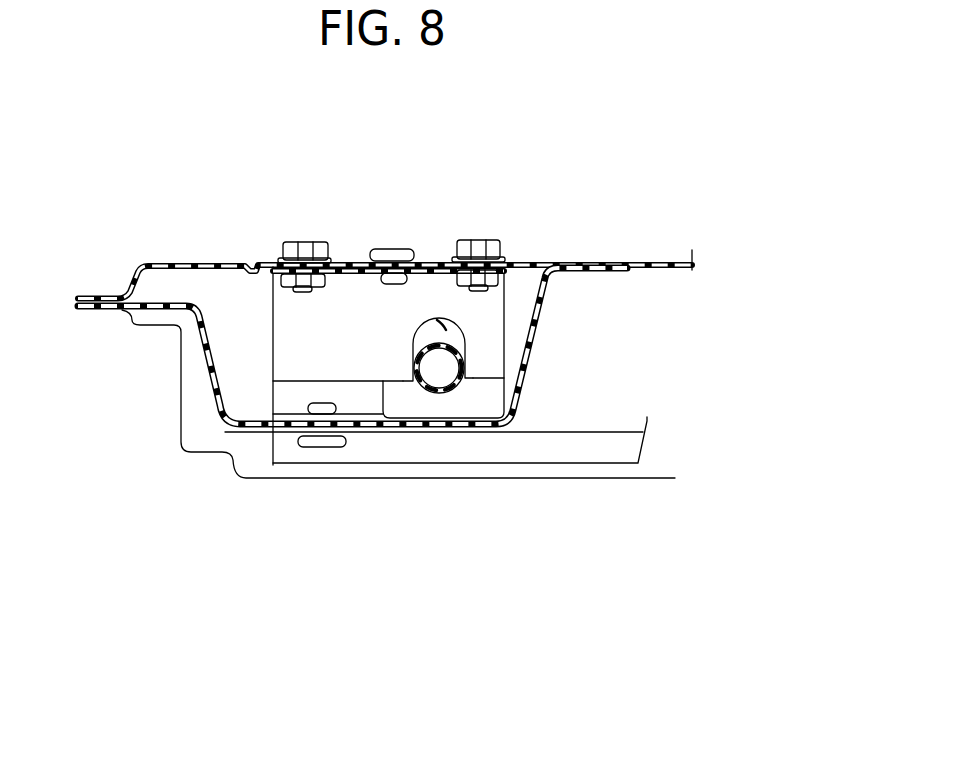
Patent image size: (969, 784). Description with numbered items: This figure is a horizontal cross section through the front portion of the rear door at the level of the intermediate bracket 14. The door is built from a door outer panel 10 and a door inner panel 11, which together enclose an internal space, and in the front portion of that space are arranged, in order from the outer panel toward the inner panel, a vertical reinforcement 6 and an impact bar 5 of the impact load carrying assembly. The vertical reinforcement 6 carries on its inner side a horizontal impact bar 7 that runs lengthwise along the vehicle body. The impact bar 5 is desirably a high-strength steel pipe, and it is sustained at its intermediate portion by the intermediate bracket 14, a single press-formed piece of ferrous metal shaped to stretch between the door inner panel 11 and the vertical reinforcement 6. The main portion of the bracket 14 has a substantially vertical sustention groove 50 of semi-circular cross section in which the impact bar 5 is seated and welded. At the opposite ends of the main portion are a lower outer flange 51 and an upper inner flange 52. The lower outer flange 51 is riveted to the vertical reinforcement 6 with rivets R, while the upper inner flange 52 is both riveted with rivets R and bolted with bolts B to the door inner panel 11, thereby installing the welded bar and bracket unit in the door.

The door inner panel 11 is at (632, 261).
The vertical reinforcement 6 is at (536, 348).
The horizontal impact bar 7 is at (623, 452).
The door outer panel 10 is at (543, 477).
The intermediate bracket 14 is at (402, 338).
The upper inner flange 52 is at (344, 268).
The lower outer flange 51 is at (285, 415).
The sustention groove 50 is at (447, 328).
The impact bar 5 is at (440, 393).
The bolt B is at (293, 242).
The rivet R is at (406, 250).